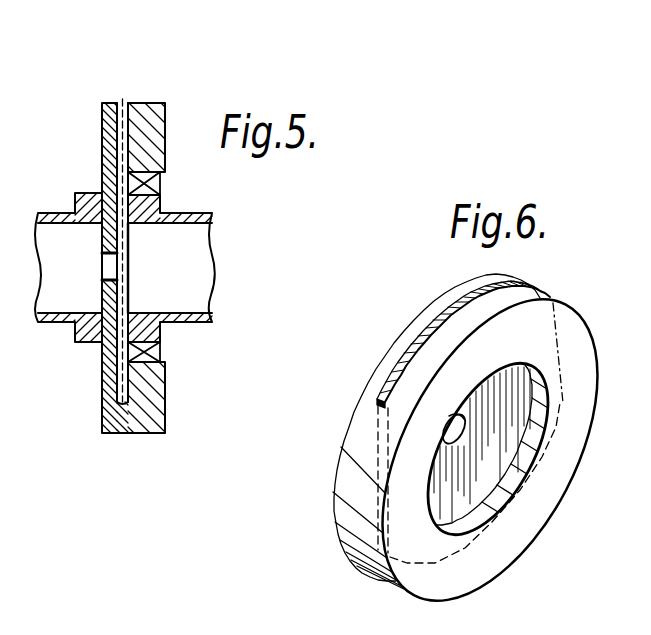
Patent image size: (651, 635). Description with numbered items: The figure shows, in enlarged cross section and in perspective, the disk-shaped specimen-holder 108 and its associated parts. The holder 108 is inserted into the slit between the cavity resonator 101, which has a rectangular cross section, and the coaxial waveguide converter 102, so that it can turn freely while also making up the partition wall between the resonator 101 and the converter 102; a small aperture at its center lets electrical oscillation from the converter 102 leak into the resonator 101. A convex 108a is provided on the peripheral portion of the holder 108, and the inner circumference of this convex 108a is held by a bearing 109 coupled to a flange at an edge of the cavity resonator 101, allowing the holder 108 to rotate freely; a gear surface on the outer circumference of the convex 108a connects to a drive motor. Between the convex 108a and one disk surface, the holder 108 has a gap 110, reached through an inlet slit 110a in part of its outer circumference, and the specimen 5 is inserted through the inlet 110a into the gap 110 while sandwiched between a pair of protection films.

In FIG. 5, the section line / pipe interior 5 is at (133, 257).
In FIG. 5, the cavity resonator 101 is at (213, 244).
In FIG. 5, the coaxial waveguide converter 102 is at (44, 214).
In FIG. 5, the disk-shaped specimen-holder 108 is at (150, 250).
In FIG. 6, the disk-shaped specimen-holder 108 is at (470, 442).
In FIG. 5, the convex 108a is at (165, 105).
In FIG. 6, the convex 108a is at (527, 312).
In FIG. 5, the bearing 109 is at (161, 185).
In FIG. 5, the gap 110 is at (123, 226).
In FIG. 6, the gap 110 is at (459, 304).
In FIG. 5, the inlet slit 110a is at (121, 100).